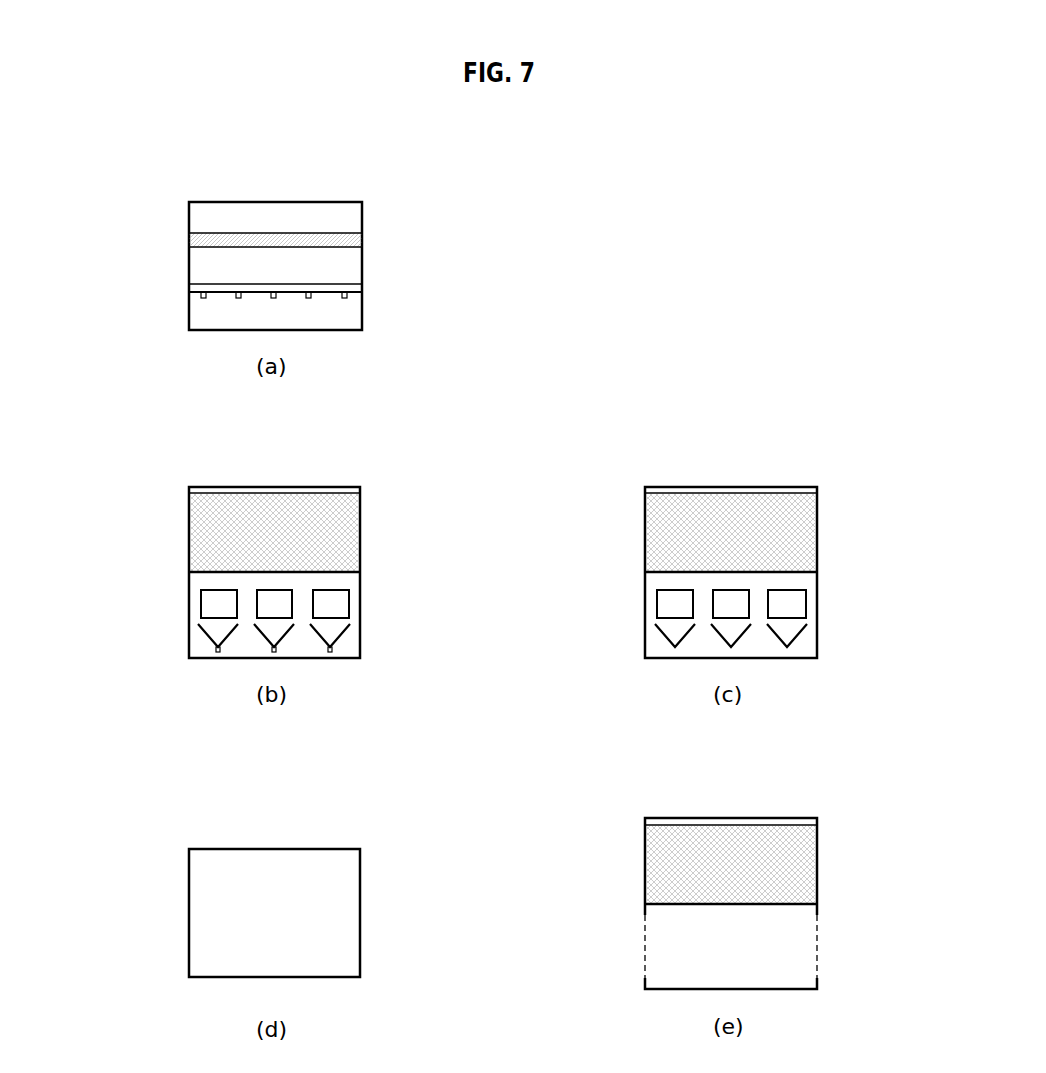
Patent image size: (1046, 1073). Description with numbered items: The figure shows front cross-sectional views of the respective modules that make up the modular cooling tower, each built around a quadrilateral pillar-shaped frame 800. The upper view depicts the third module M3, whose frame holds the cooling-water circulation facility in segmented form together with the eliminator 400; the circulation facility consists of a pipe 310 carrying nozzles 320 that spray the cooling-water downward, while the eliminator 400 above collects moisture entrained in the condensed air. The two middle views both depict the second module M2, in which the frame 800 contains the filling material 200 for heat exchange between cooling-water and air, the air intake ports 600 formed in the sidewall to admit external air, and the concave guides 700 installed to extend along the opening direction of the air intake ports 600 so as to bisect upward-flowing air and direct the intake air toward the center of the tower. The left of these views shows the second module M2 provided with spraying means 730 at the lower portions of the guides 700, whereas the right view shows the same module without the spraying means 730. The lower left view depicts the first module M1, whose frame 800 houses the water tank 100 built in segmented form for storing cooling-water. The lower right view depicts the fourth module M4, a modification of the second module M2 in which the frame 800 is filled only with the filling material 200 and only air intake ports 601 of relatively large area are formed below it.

The water tank 100 is at (200, 949).
The filling material 200 is at (200, 527).
The pipe 310 is at (204, 286).
The nozzles 320 is at (201, 296).
The eliminator 400 is at (362, 243).
The air intake ports 600 is at (349, 601).
The air intake ports 601 is at (817, 947).
The guides 700 is at (205, 637).
The spraying means 730 is at (334, 643).
The frame 800 is at (189, 216).
The first module M1 is at (378, 838).
The second module M2 is at (378, 475).
The third module M3 is at (378, 194).
The fourth module M4 is at (836, 805).